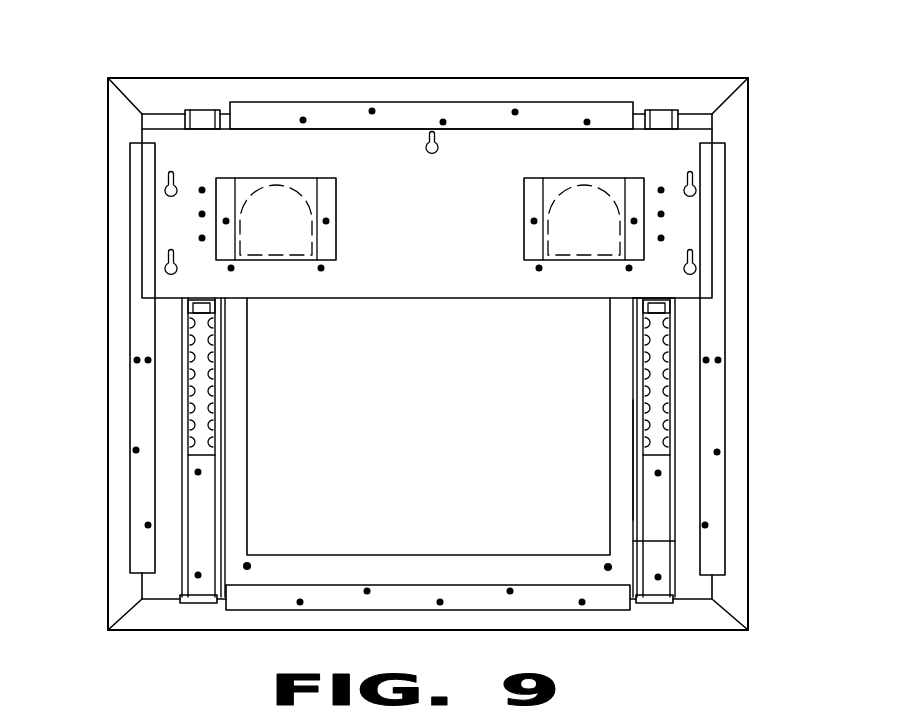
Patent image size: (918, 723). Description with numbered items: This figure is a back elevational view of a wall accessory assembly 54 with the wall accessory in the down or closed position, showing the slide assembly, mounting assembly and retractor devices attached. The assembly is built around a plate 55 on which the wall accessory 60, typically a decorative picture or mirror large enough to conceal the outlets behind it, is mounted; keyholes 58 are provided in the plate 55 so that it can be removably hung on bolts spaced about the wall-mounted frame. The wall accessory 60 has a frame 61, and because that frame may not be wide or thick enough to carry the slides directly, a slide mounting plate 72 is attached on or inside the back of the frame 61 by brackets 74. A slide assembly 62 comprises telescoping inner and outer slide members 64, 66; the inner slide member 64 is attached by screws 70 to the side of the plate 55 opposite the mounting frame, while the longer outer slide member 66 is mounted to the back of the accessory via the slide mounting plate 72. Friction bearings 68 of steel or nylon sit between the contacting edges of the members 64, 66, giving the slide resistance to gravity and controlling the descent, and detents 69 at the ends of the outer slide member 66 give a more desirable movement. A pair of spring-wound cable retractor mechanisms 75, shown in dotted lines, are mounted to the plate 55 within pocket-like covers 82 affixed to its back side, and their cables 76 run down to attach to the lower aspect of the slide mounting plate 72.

The wall accessory assembly 54 is at (400, 72).
The plate 55 is at (478, 165).
The keyholes 58 is at (432, 133).
The wall accessory 60 is at (682, 80).
The frame 61 is at (738, 130).
The slide assembly 62 is at (680, 468).
The inner slide member 64 is at (662, 312).
The outer slide member 66 is at (662, 541).
The friction bearings 68 is at (675, 385).
The detents 69 is at (208, 108).
The screws 70 is at (204, 188).
The slide mounting plate 72 is at (170, 402).
The brackets 74 is at (343, 112).
The spring-wound cable retractor mechanisms 75 is at (585, 245).
The cables 76 is at (610, 398).
The pocket-like covers 82 is at (280, 243).